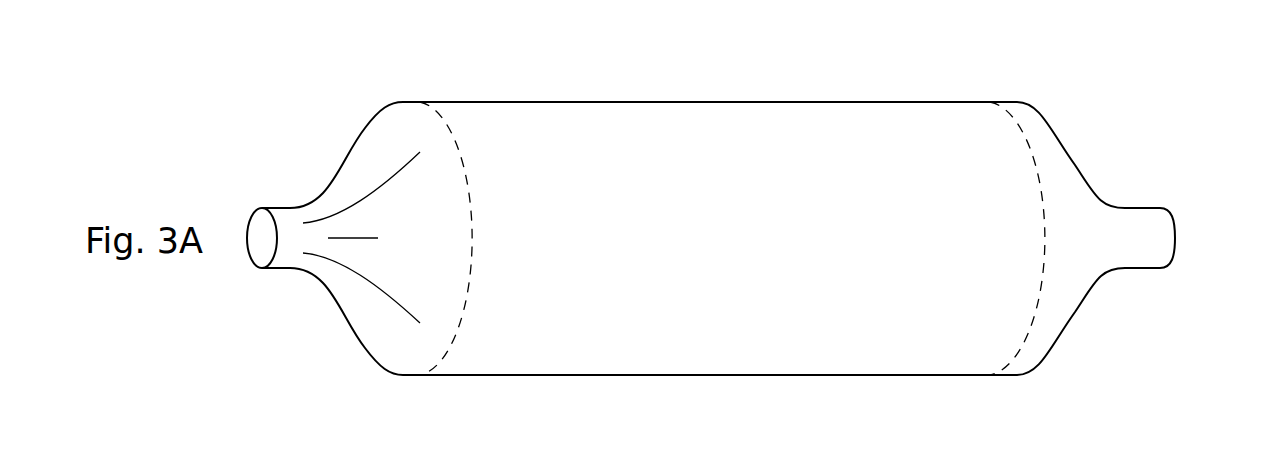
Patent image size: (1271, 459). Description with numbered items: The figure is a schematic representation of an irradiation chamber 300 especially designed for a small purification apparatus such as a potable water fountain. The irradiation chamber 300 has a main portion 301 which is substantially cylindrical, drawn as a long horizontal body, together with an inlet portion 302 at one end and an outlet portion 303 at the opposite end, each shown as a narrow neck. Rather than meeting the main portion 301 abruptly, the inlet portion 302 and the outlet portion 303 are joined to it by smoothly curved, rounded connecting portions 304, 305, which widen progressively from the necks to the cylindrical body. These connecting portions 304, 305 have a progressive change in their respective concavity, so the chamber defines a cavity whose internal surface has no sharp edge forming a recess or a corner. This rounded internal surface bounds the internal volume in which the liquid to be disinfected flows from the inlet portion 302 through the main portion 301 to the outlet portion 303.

The irradiation chamber 300 is at (1131, 109).
The main portion 301 is at (742, 102).
The inlet portion 302 is at (288, 208).
The outlet portion 303 is at (1140, 223).
The connecting portion 304 is at (373, 335).
The connecting portion 305 is at (1066, 307).